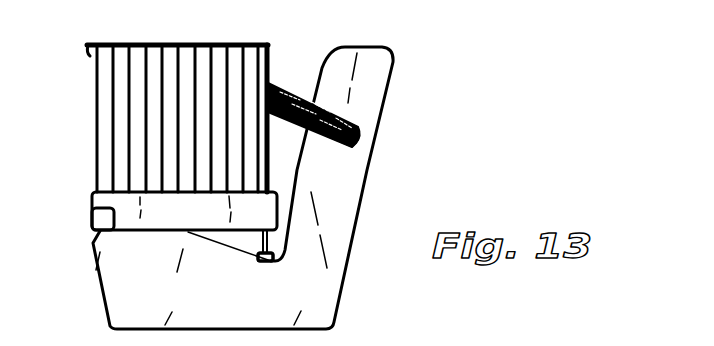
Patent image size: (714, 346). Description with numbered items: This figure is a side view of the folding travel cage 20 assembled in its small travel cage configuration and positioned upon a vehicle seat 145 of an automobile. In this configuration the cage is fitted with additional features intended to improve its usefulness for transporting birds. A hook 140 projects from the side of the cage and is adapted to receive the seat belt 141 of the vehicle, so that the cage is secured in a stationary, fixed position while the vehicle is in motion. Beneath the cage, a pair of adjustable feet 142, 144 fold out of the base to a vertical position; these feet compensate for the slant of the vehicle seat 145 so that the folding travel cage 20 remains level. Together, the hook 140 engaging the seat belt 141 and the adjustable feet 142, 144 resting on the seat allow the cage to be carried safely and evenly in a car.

The folding travel cage 20 is at (88, 141).
The hook 140 is at (274, 82).
The seat belt 141 is at (333, 131).
The adjustable foot 142 is at (263, 241).
The adjustable foot 144 is at (265, 257).
The vehicle seat 145 is at (383, 97).